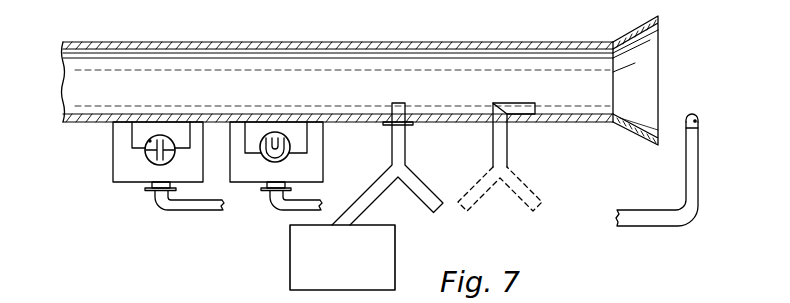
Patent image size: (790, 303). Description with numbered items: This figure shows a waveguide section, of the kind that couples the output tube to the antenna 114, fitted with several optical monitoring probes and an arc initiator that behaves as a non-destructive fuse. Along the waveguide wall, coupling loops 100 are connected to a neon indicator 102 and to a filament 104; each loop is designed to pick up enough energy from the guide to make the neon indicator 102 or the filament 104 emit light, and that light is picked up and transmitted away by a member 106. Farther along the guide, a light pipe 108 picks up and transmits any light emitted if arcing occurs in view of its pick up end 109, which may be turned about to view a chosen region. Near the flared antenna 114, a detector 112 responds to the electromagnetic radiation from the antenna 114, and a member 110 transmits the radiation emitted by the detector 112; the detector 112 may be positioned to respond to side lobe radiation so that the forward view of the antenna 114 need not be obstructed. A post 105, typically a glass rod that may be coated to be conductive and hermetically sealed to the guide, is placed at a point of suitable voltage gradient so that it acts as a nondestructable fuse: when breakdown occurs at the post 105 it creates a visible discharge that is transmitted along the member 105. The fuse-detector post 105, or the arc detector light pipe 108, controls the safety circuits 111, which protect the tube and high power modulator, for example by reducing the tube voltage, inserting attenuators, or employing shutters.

The coupling loops 100 is at (253, 111).
The neon indicator 102 is at (145, 152).
The filament 104 is at (290, 151).
The post 105 is at (407, 148).
The member 106 is at (178, 208).
The light pipe 108 is at (508, 147).
The pick up end 109 is at (536, 105).
The member 110 is at (699, 191).
The safety circuits 111 is at (290, 257).
The detector 112 is at (699, 120).
The antenna 114 is at (650, 32).